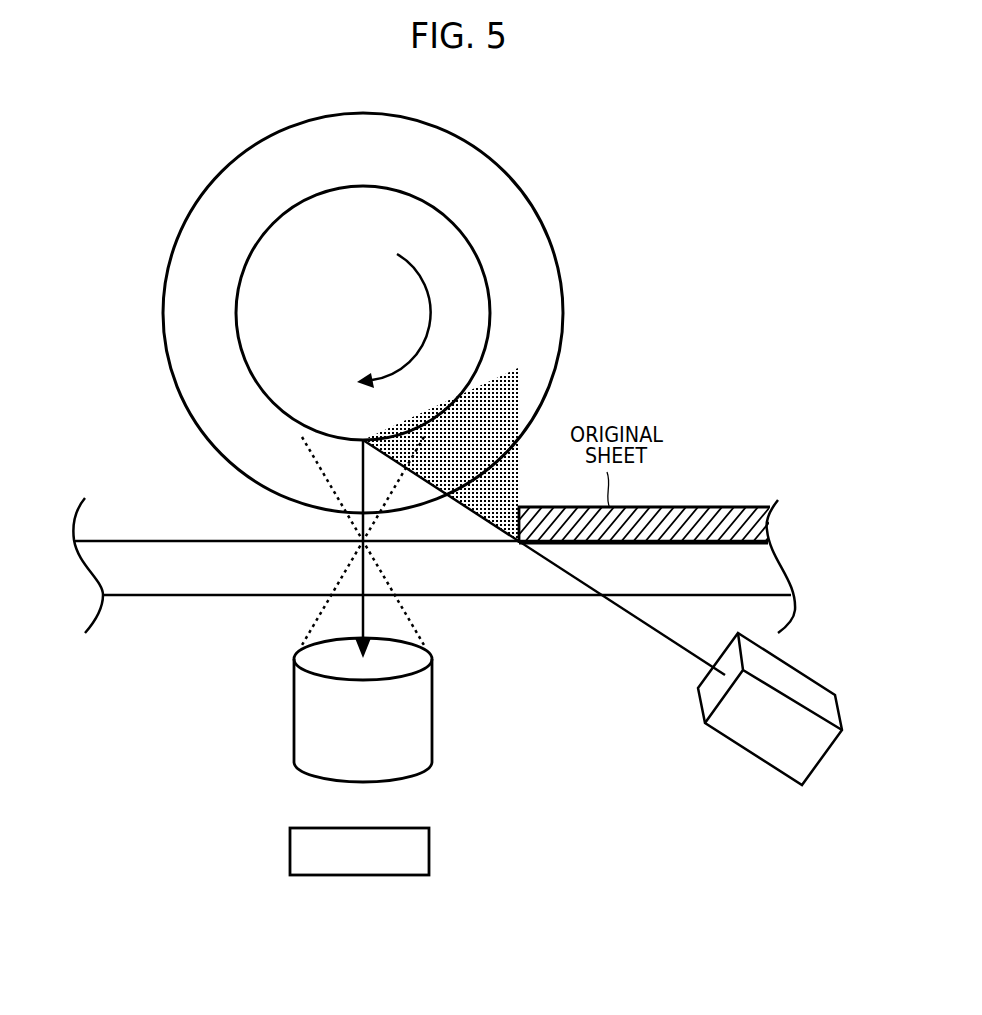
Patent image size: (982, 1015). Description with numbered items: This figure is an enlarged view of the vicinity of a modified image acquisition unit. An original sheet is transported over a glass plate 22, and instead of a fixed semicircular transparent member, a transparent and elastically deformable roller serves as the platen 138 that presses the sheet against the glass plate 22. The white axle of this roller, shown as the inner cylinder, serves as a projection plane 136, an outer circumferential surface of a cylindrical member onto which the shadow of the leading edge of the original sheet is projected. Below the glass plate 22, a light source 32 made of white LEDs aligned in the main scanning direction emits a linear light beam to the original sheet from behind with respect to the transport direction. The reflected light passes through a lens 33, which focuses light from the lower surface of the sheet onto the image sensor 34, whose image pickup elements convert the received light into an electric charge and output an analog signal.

The projection plane 136 is at (257, 380).
The platen 138 is at (222, 460).
The glass plate 22 is at (725, 563).
The light source 32 is at (797, 672).
The lens 33 is at (432, 712).
The image sensor 34 is at (429, 852).